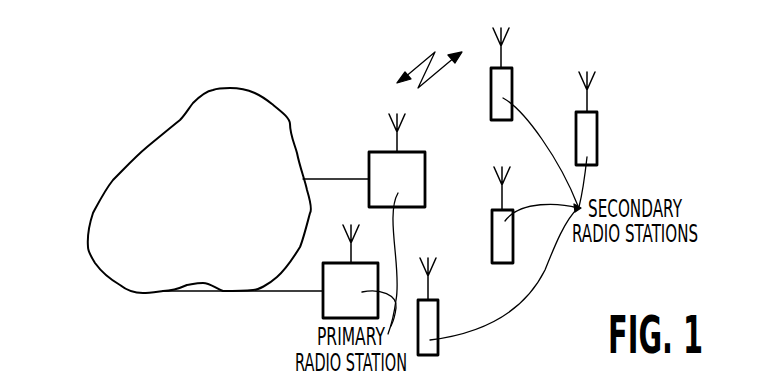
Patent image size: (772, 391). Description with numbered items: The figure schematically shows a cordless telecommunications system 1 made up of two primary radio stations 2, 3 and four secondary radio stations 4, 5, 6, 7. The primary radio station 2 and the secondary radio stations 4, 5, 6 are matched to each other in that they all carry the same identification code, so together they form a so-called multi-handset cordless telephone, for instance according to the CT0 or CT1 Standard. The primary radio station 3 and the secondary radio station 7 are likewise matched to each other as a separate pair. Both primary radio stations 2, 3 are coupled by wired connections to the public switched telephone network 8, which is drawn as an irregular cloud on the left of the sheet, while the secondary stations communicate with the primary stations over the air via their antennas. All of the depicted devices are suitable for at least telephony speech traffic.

The cordless telecommunications system 1 is at (186, 173).
The primary radio station 2 is at (420, 164).
The primary radio station 3 is at (332, 305).
The secondary radio station 4 is at (509, 92).
The secondary radio station 5 is at (595, 131).
The secondary radio station 6 is at (512, 233).
The secondary radio station 7 is at (436, 322).
The public switched telephone network 8 is at (280, 127).